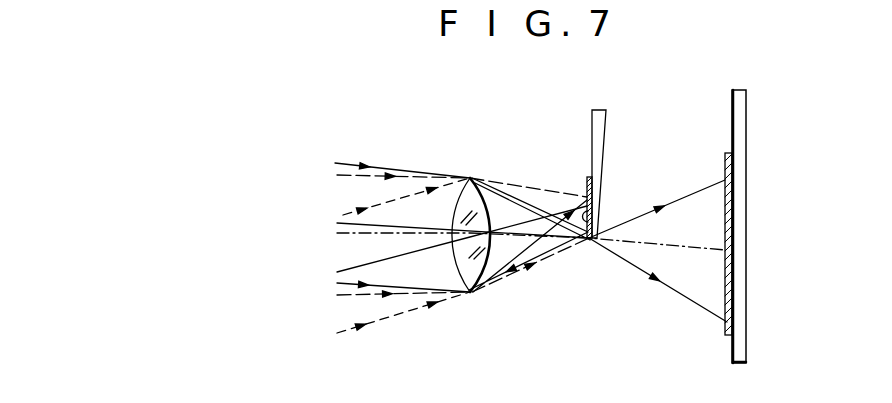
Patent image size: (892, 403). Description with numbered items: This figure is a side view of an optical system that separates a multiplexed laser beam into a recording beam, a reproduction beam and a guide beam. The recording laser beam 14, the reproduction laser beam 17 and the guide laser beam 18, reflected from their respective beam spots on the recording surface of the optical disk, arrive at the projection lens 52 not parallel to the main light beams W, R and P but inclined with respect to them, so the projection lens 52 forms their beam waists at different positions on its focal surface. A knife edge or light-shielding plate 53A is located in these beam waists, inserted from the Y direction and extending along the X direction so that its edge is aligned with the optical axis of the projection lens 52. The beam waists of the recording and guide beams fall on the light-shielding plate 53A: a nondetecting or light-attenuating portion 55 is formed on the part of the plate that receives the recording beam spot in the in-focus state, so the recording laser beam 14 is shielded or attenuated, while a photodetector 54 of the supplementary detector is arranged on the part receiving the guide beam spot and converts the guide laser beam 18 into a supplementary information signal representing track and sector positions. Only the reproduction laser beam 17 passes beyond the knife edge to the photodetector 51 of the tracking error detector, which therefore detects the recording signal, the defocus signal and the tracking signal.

The projection lens 52 is at (459, 201).
The light-shielding plate 53A is at (607, 123).
The photodetector 54 is at (587, 198).
The light-attenuating portion 55 is at (591, 219).
The photodetector 51 is at (747, 122).
The reproduction laser beam 17 is at (338, 284).
The recording laser beam 14 is at (365, 298).
The guide laser beam 18 is at (423, 312).
The main light beam W is at (352, 234).
The main light beam P is at (400, 257).
The main light beam R is at (653, 250).